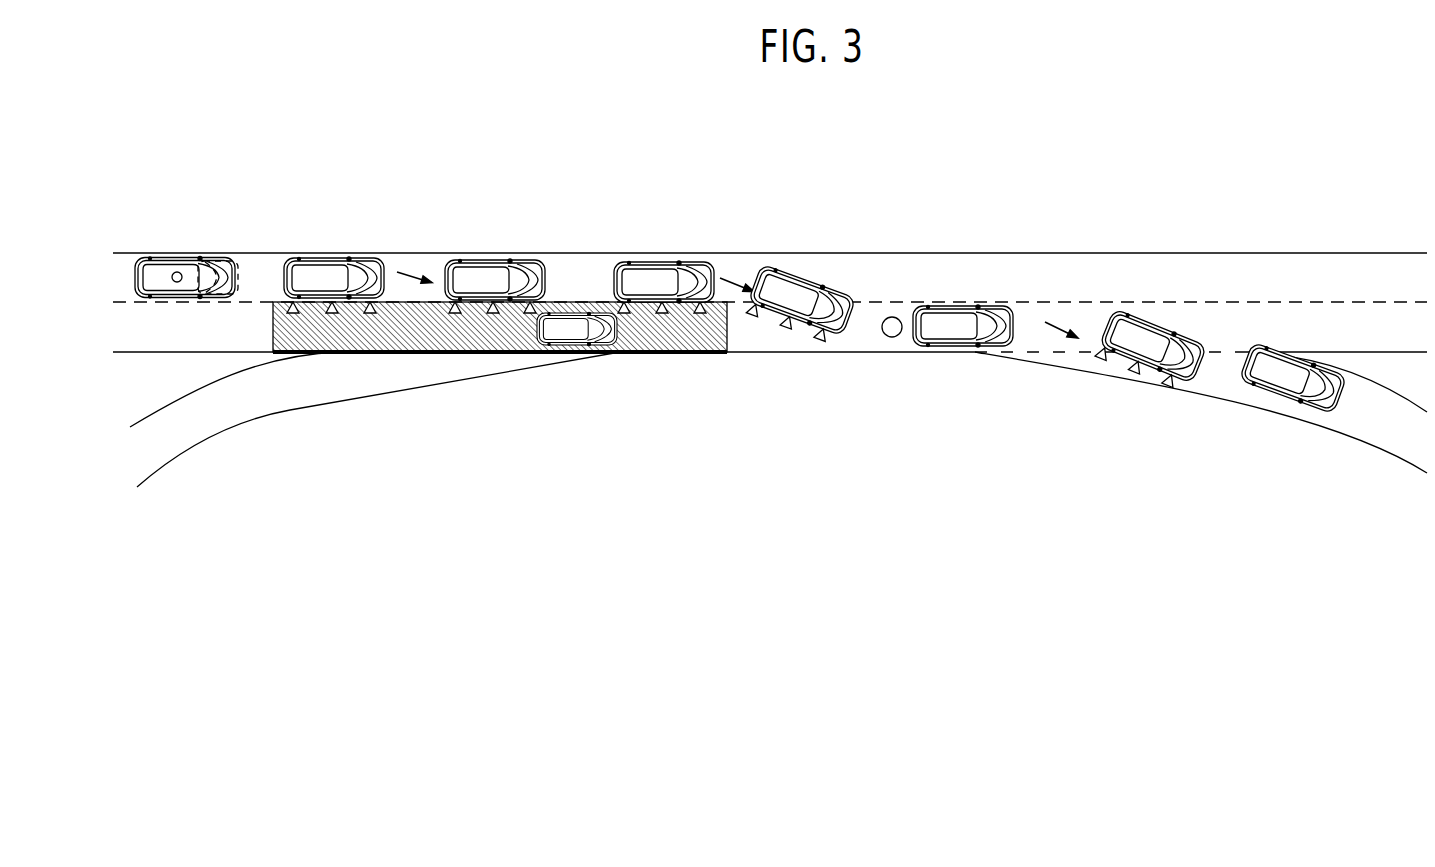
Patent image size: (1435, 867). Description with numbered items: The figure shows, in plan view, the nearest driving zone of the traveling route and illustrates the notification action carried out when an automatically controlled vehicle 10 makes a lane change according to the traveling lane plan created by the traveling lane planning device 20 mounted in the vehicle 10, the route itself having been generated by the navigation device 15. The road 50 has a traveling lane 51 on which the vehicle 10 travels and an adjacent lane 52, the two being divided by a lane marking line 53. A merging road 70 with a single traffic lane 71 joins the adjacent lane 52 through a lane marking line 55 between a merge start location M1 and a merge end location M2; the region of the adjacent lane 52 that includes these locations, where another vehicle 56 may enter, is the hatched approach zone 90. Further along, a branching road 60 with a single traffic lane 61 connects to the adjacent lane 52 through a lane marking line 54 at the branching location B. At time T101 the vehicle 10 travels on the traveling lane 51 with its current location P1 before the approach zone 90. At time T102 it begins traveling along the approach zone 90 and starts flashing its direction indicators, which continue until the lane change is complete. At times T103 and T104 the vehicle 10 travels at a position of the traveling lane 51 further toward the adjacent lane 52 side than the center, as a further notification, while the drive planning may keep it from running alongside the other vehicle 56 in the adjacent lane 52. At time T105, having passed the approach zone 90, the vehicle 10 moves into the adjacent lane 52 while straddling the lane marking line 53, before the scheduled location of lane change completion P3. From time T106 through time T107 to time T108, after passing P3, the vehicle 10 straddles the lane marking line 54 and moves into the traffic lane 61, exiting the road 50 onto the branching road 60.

The vehicle 10 is at (157, 257).
The navigation device 15 is at (213, 257).
The traveling lane planning device 20 is at (243, 264).
The current location P1 is at (177, 272).
The scheduled location of lane change completion P3 is at (890, 316).
The road 50 is at (1046, 247).
The traveling lane 51 is at (1312, 289).
The adjacent lane 52 is at (1312, 340).
The lane marking line 53 is at (1392, 300).
The lane marking line 54 is at (1232, 352).
The lane marking line 55 is at (430, 353).
The other vehicle 56 is at (560, 338).
The branching road 60 is at (1370, 443).
The traffic lane 61 is at (1354, 412).
The merging road 70 is at (305, 421).
The traffic lane 71 is at (258, 398).
The approach zone 90 is at (693, 347).
The branching location B is at (975, 352).
The merge start location M1 is at (323, 353).
The merge end location M2 is at (627, 352).
The time T101 is at (200, 240).
The time T102 is at (334, 260).
The time T103 is at (495, 261).
The time T104 is at (664, 262).
The time T105 is at (800, 283).
The time T106 is at (963, 307).
The time T107 is at (1151, 334).
The time T108 is at (1271, 387).